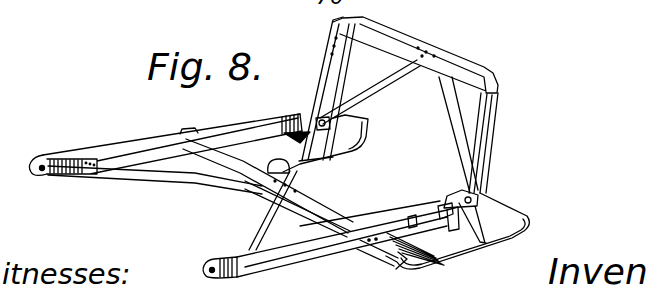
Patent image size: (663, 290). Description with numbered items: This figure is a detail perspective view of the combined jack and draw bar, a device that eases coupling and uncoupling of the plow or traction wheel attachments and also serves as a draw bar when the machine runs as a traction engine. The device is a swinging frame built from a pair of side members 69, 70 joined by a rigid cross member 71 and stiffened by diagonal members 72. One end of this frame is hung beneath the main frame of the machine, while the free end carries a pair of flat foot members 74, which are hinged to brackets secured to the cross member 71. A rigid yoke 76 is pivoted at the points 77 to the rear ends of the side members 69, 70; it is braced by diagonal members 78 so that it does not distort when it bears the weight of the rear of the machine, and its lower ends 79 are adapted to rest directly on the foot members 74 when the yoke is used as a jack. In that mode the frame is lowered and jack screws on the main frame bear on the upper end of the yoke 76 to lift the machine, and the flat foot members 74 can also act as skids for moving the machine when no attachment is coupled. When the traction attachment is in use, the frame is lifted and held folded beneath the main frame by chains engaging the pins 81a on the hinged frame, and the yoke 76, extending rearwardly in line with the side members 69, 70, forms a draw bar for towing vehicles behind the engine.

The side member 69 is at (140, 141).
The side member 70 is at (248, 253).
The rigid cross member 71 is at (322, 204).
The diagonal members 72 is at (173, 179).
The foot members 74 is at (360, 140).
The yoke 76 is at (463, 62).
The pivot points 77 is at (332, 125).
The diagonal members 78 is at (442, 104).
The lower ends of the yoke 79 is at (274, 172).
The pins 81a is at (413, 216).